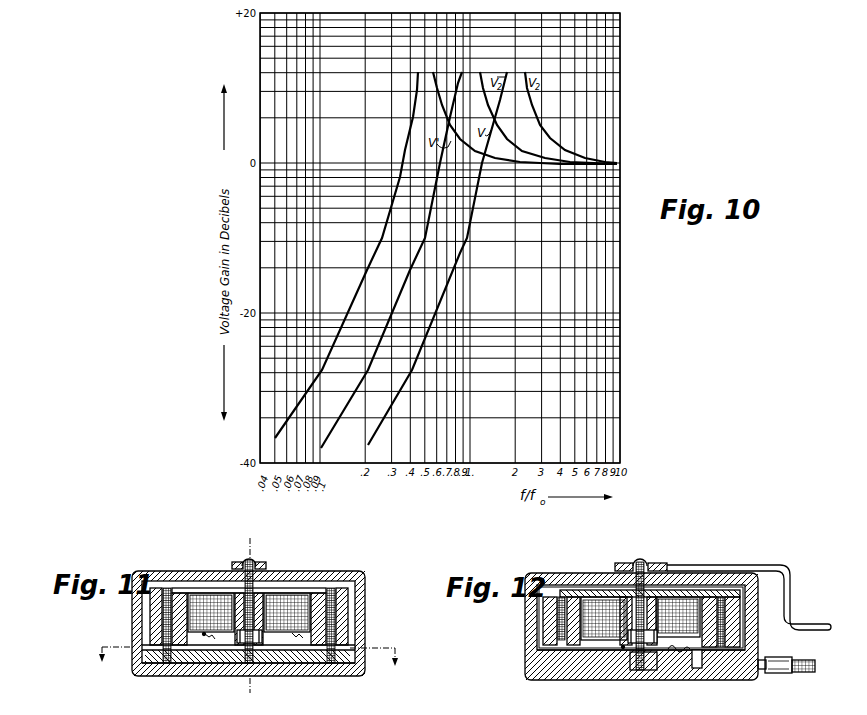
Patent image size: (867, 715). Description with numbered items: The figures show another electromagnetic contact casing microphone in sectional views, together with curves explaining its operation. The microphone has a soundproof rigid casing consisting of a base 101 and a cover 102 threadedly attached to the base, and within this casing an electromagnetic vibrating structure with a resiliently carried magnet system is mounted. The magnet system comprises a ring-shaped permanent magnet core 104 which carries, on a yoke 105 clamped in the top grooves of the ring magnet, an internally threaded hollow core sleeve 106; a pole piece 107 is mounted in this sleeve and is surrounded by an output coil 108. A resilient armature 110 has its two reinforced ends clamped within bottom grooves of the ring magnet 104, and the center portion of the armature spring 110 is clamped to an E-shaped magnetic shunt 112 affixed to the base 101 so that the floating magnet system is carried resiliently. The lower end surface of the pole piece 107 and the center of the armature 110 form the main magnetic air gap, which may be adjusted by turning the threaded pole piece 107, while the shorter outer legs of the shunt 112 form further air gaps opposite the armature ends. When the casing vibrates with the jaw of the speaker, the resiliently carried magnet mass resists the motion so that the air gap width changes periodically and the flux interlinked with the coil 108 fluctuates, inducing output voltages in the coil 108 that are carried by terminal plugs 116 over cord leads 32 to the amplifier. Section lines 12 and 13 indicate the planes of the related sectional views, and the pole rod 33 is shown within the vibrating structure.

In FIG. 11, the section line 12- 12 is at (236, 693).
In FIG. 11, the section line 13- 13 is at (252, 667).
In FIG. 11, the cord leads 32 is at (224, 589).
In FIG. 12, the cord leads 32 is at (575, 591).
In FIG. 12, the pole rod 33 is at (562, 628).
In FIG. 11, the base 101 is at (307, 676).
In FIG. 12, the base 101 is at (557, 673).
In FIG. 11, the cover 102 is at (311, 581).
In FIG. 12, the cover 102 is at (537, 573).
In FIG. 11, the ring-shaped permanent magnet core 104 is at (346, 599).
In FIG. 12, the ring-shaped permanent magnet core 104 is at (547, 620).
In FIG. 11, the yoke 105 is at (205, 591).
In FIG. 11, the hollow core sleeve 106 is at (272, 592).
In FIG. 12, the hollow core sleeve 106 is at (652, 594).
In FIG. 11, the pole piece 107 is at (257, 594).
In FIG. 12, the pole piece 107 is at (630, 595).
In FIG. 11, the output coil 108 is at (312, 586).
In FIG. 12, the output coil 108 is at (680, 599).
In FIG. 11, the resilient armature 110 is at (294, 640).
In FIG. 12, the resilient armature 110 is at (623, 647).
In FIG. 11, the E-shaped magnetic shunt 112 is at (162, 658).
In FIG. 12, the E-shaped magnetic shunt 112 is at (631, 670).
In FIG. 12, the terminal plugs 116 is at (790, 674).